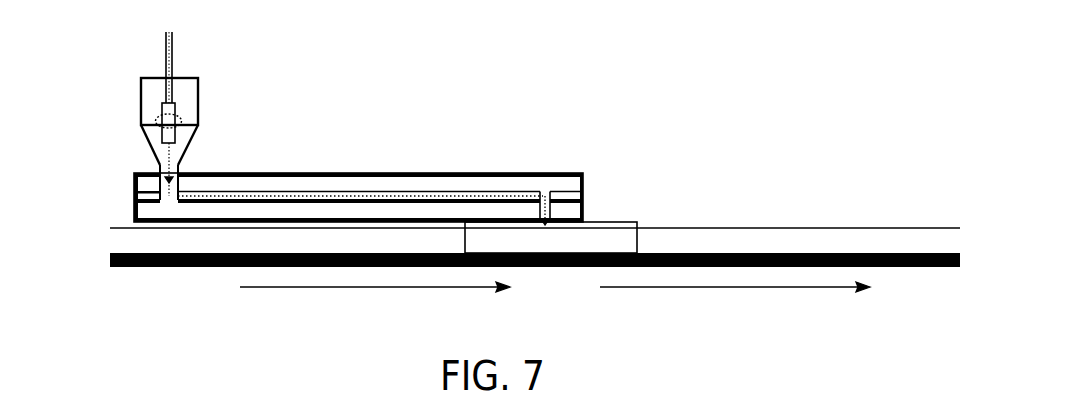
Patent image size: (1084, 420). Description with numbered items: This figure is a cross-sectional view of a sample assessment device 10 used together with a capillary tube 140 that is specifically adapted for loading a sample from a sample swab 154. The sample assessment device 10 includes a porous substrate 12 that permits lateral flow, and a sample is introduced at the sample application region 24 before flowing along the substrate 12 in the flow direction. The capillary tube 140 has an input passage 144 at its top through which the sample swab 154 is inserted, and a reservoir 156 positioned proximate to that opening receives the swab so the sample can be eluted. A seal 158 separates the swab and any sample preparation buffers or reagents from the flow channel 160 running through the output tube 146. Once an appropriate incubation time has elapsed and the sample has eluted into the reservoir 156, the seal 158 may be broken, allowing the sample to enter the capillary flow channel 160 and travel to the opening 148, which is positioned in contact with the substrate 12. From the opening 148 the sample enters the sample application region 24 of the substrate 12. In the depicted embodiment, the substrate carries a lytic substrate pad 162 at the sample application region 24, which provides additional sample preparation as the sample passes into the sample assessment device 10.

The sample assessment device 10 is at (664, 51).
The substrate 12 is at (146, 243).
The sample application region 24 is at (627, 292).
The capillary tube 140 is at (159, 107).
The input passage 144 is at (147, 77).
The output tube 146 is at (418, 173).
The opening 148 is at (551, 210).
The sample swab 154 is at (173, 47).
The reservoir 156 is at (180, 124).
The seal 158 is at (157, 166).
The flow channel 160 is at (338, 194).
The lytic substrate pad 162 is at (624, 222).